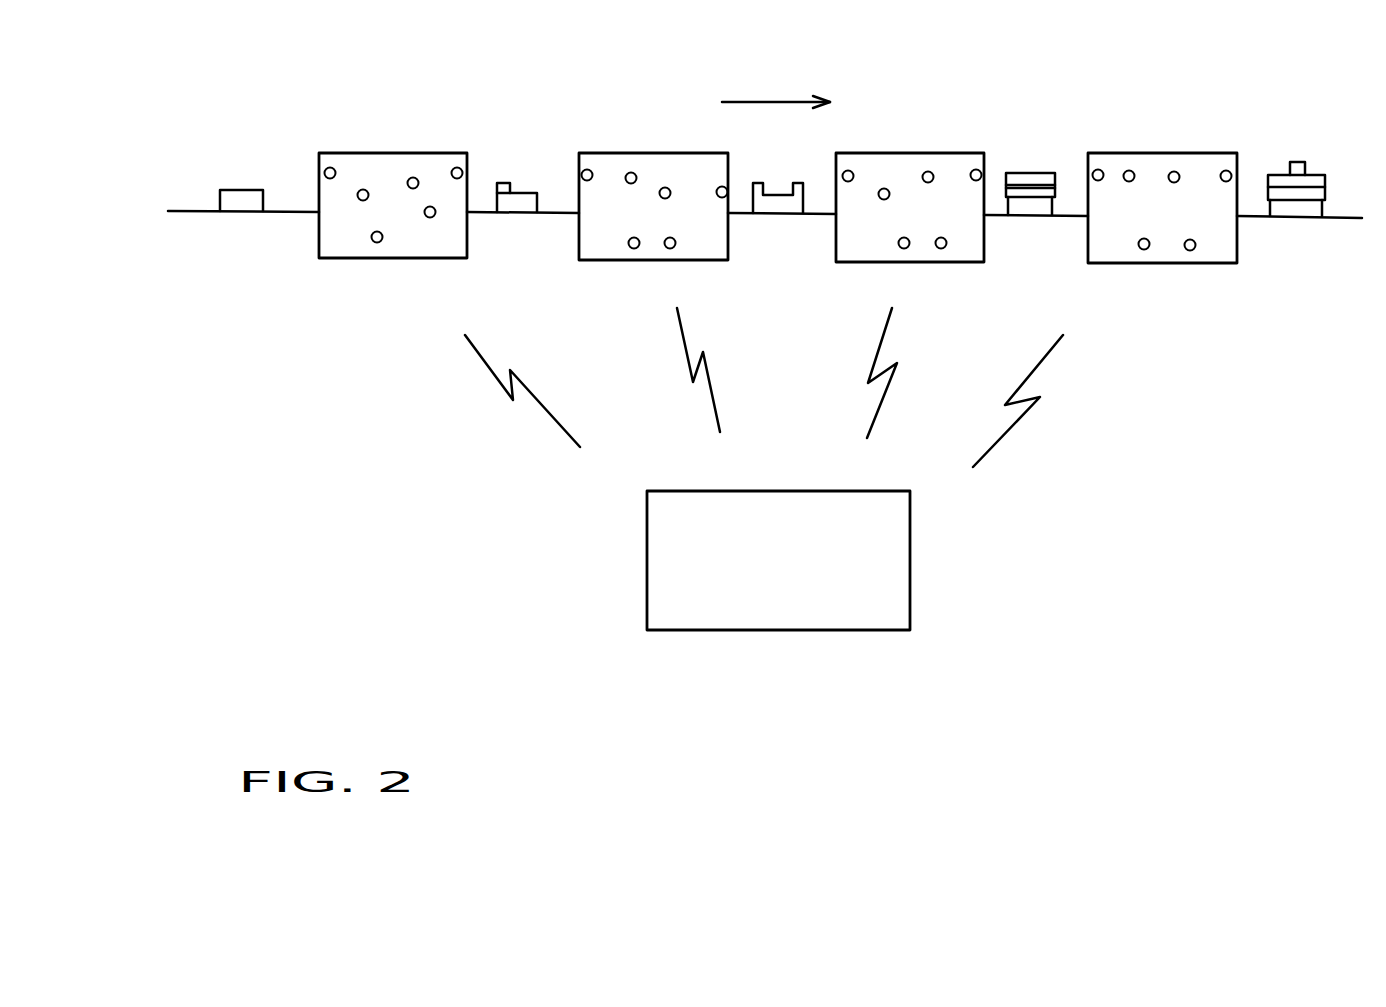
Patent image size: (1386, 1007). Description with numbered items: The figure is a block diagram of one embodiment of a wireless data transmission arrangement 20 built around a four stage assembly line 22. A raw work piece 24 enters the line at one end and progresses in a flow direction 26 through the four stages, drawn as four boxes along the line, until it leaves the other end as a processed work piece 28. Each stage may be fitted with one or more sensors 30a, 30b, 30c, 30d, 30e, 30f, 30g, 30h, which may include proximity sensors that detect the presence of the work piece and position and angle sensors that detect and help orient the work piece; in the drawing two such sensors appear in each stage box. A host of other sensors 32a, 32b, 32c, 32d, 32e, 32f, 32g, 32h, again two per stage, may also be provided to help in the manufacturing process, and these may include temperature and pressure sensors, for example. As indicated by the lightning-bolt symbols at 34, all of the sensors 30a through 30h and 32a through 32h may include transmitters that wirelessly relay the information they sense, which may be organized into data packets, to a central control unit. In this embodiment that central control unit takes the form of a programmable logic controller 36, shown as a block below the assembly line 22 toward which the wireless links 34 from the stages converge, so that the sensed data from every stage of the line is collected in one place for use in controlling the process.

The wireless data transmission arrangement 20 is at (1180, 688).
The four stage assembly line 22 is at (288, 310).
The raw work piece 24 is at (242, 203).
The flow direction 26 is at (773, 102).
The processed work piece 28 is at (1302, 193).
The sensor 30a is at (331, 168).
The sensor 30b is at (457, 168).
The sensor 30c is at (588, 170).
The sensor 30d is at (722, 187).
The sensor 30e is at (849, 171).
The sensor 30f is at (976, 170).
The sensor 30g is at (1098, 170).
The sensor 30h is at (1226, 171).
The sensor 32a is at (375, 243).
The sensor 32b is at (429, 218).
The sensor 32c is at (632, 249).
The sensor 32d is at (668, 249).
The sensor 32e is at (900, 246).
The sensor 32f is at (940, 249).
The sensor 32g is at (1142, 250).
The sensor 32h is at (1189, 251).
The wireless relay of sensed information 34 is at (710, 397).
The programmable logic controller (PLC) 36 is at (797, 630).